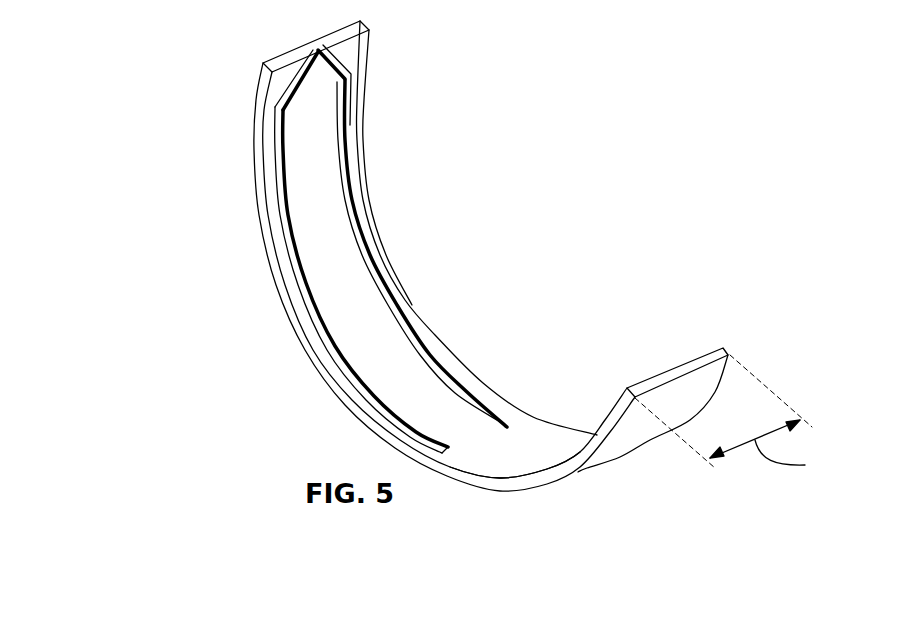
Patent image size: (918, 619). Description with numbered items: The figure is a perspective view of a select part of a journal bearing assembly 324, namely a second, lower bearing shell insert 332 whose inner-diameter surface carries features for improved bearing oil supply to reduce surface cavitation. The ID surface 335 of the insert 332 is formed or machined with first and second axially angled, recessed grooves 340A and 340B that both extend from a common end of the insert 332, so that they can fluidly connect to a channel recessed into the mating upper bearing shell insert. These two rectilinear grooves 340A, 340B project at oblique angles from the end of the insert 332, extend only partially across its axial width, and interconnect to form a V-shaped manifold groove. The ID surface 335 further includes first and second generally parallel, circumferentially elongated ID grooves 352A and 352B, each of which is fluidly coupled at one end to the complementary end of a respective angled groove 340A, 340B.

The journal bearing assembly 324 is at (441, 256).
The second bearing shell insert 332 is at (253, 147).
The ID surface 335 is at (550, 440).
The first axially angled recessed groove 340A is at (290, 88).
The second axially angled recessed groove 340B is at (330, 67).
The first circumferentially elongated ID groove 352A is at (280, 162).
The second circumferentially elongated ID groove 352B is at (340, 143).